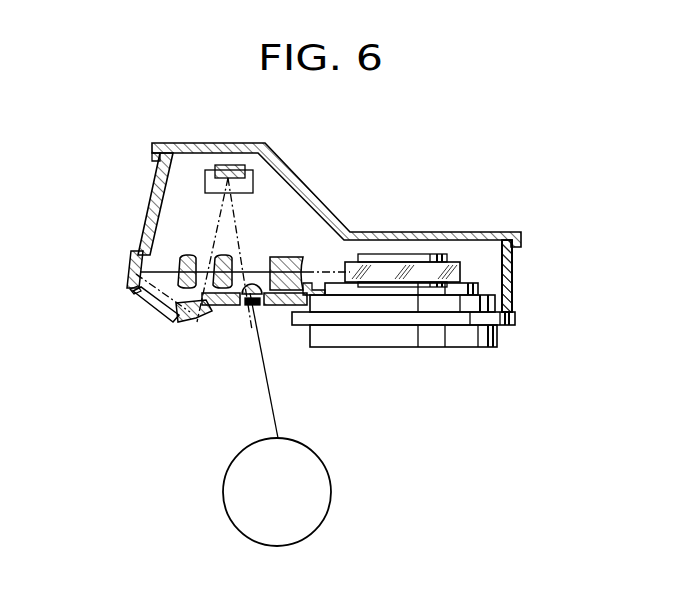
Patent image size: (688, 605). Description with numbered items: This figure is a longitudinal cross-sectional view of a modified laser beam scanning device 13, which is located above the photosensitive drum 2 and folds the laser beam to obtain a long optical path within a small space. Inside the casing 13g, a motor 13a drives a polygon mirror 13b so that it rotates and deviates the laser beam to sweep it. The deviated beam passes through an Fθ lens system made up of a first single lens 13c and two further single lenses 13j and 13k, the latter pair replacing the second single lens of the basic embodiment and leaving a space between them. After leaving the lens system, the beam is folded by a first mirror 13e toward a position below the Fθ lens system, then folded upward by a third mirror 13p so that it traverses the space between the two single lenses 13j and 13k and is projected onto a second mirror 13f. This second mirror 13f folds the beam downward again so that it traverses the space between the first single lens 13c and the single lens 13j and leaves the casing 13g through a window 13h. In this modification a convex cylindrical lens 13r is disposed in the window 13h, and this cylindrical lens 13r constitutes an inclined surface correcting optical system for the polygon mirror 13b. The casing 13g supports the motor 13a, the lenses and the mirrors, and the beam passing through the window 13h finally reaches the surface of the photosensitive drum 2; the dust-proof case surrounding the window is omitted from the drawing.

The laser beam scanning device 13 is at (404, 232).
The motor 13a is at (497, 333).
The polygon mirror 13b is at (455, 262).
The first single lens 13c is at (293, 257).
The first mirror 13e is at (127, 268).
The second mirror 13f is at (230, 166).
The casing 13g is at (513, 275).
The window 13h is at (262, 305).
The single lens 13j is at (232, 305).
The single lens 13k is at (166, 321).
The third mirror 13p is at (191, 320).
The convex cylindrical lens 13r is at (253, 292).
The photosensitive drum 2 is at (326, 466).